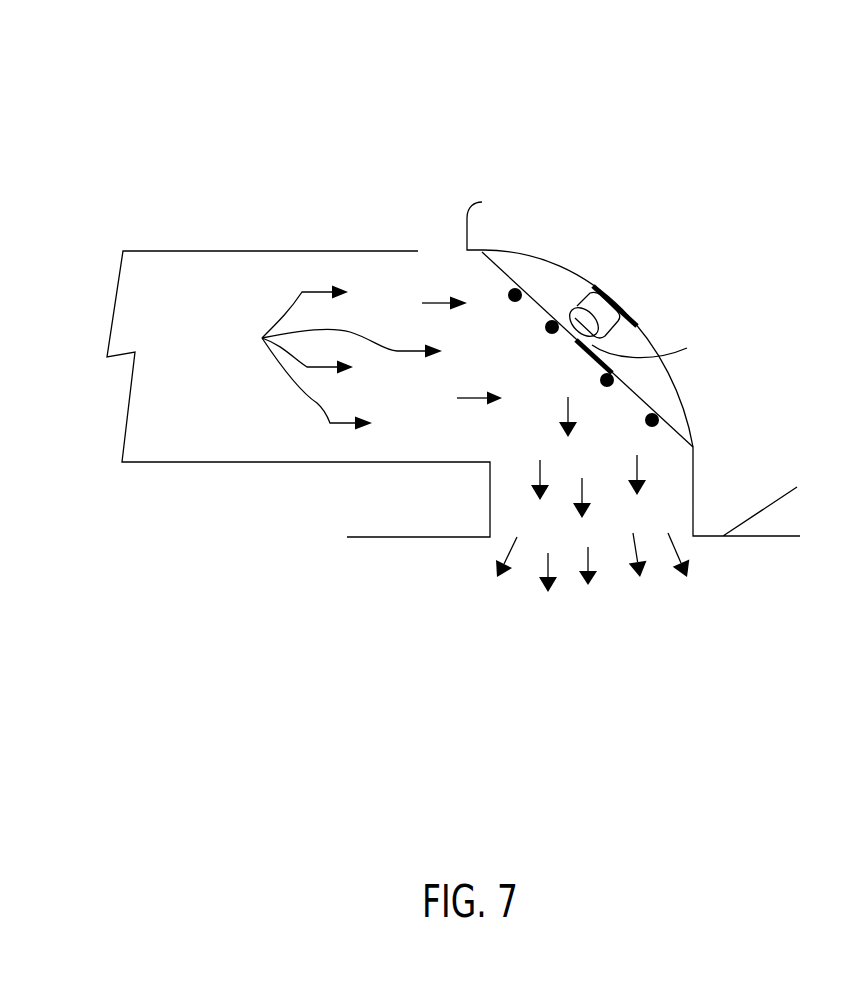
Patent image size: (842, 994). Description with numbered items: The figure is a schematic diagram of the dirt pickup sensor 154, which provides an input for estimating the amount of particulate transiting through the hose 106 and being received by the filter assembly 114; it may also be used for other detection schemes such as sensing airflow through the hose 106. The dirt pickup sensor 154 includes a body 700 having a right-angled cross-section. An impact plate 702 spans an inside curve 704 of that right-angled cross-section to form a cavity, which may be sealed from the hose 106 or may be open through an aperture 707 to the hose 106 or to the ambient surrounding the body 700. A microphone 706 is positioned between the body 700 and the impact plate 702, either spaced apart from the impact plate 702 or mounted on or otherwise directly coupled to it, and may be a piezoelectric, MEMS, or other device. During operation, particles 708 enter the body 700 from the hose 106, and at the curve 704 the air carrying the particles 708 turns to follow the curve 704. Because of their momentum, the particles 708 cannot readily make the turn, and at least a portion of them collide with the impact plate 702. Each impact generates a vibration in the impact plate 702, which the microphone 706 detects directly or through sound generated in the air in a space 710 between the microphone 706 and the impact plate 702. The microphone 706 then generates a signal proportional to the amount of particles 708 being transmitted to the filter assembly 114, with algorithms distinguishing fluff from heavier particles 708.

The hose 106 is at (140, 462).
The filter assembly 114 is at (604, 737).
The dirt pickup sensor 154 is at (757, 90).
The body 700 is at (633, 364).
The impact plate 702 is at (538, 300).
The inside curve 704 is at (672, 405).
The microphone 706 is at (620, 328).
The aperture 707 is at (615, 300).
The particles 708 is at (360, 358).
The space 710 is at (655, 348).